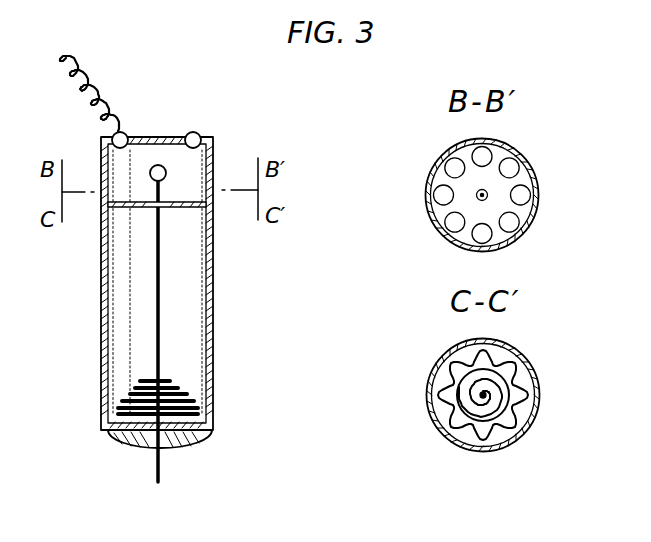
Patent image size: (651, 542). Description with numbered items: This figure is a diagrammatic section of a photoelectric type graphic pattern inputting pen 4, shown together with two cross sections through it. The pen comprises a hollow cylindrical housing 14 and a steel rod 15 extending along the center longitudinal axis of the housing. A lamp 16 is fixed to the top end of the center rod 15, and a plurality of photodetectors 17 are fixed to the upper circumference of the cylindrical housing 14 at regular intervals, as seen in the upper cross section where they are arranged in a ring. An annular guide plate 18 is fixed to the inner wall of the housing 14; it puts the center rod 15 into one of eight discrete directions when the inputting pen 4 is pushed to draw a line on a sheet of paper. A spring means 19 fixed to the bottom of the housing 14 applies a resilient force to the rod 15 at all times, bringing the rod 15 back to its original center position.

The inputting pen 4 is at (195, 103).
The hollow cylindrical housing 14 is at (101, 291).
The steel rod 15 is at (162, 313).
The lamp 16 is at (166, 172).
The photodetectors 17 is at (125, 131).
The annular guide plate 18 is at (192, 208).
The spring means 19 is at (128, 393).